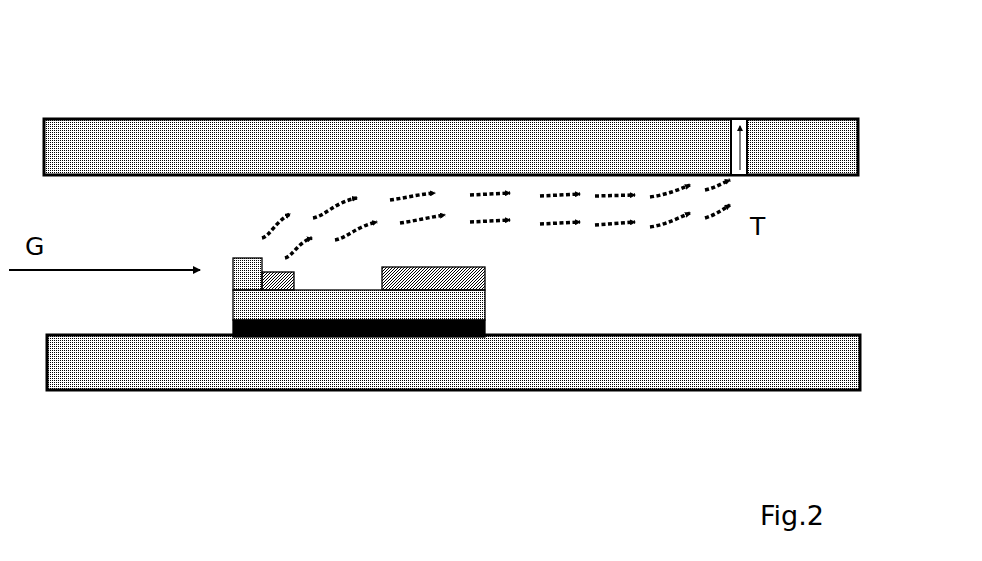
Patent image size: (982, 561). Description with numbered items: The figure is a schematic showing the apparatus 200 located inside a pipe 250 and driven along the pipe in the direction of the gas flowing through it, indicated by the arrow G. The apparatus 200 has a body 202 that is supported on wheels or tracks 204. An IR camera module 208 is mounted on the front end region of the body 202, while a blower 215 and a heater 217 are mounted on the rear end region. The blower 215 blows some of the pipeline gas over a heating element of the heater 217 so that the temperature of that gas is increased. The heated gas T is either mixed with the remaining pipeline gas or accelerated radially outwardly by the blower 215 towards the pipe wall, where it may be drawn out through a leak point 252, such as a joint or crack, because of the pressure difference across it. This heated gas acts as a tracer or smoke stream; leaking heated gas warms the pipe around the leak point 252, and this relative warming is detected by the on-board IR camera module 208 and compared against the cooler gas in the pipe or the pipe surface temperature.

The pipe 250 is at (150, 140).
The leak point 252 is at (730, 118).
The apparatus 200 is at (414, 393).
The body 202 is at (437, 302).
The wheels or tracks 204 is at (413, 336).
The IR camera module 208 is at (483, 288).
The blower 215 is at (229, 281).
The heater 217 is at (281, 296).